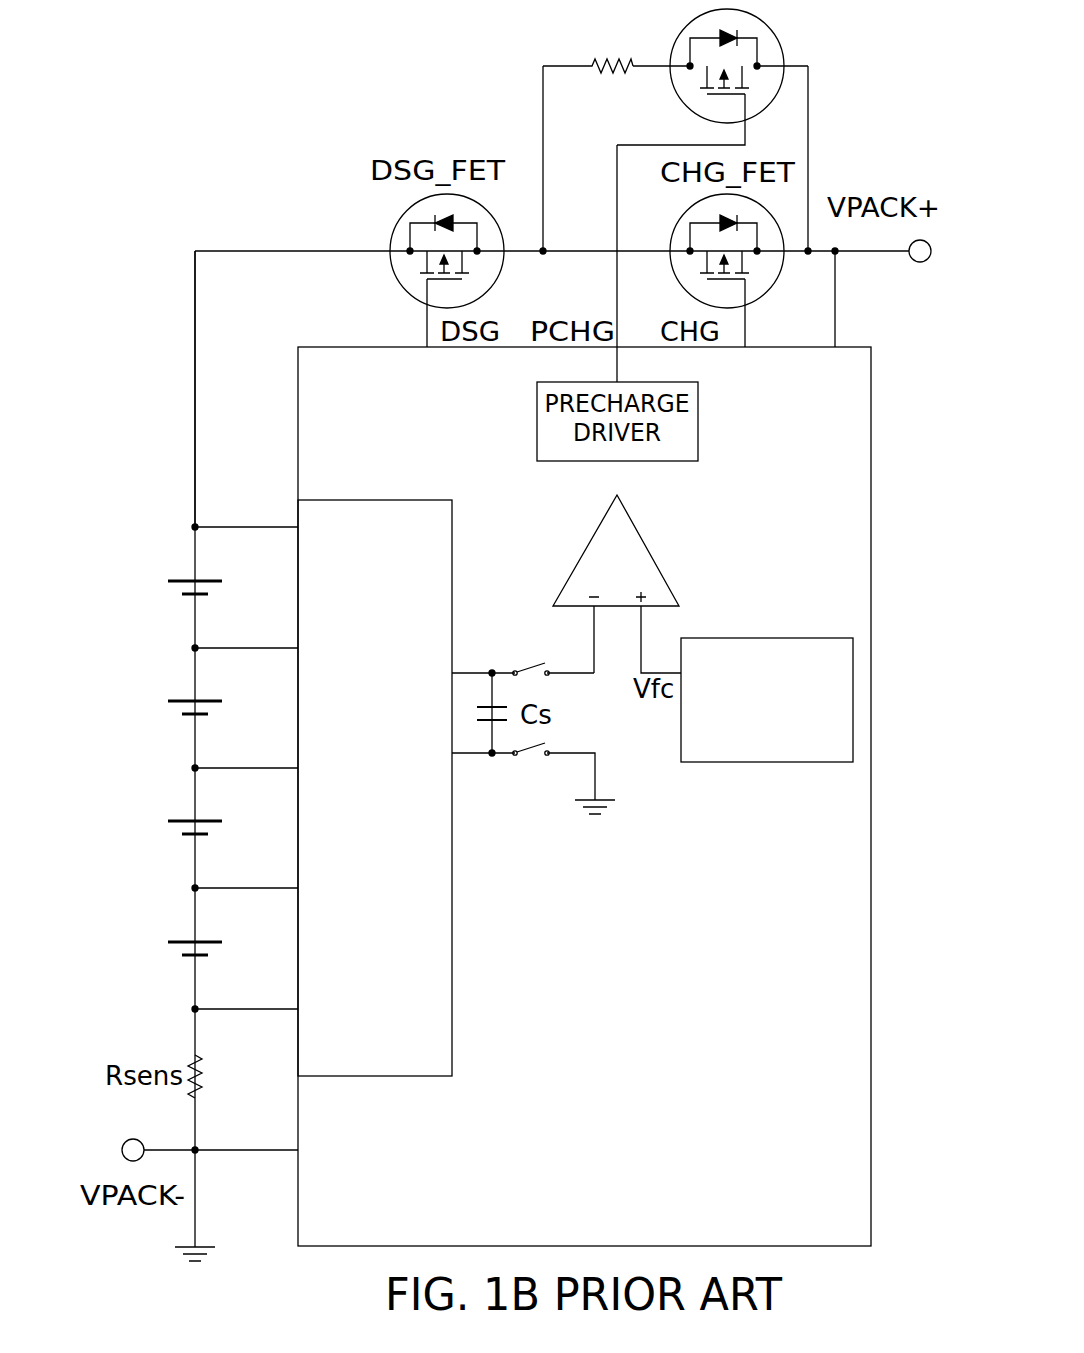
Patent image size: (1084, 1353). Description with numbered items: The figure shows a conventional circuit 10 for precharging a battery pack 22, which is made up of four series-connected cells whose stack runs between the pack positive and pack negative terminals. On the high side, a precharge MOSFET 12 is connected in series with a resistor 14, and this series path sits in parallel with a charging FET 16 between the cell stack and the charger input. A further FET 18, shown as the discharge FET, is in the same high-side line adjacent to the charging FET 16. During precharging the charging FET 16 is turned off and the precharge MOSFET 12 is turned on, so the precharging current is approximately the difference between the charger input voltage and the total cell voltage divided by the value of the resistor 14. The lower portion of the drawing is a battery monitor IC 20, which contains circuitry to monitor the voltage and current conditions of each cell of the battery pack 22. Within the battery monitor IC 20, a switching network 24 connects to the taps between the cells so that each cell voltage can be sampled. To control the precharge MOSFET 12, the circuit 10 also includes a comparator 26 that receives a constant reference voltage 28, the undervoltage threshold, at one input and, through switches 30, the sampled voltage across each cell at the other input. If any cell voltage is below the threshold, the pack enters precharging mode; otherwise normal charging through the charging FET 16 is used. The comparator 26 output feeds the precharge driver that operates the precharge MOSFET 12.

The conventional circuit 10 is at (212, 156).
The precharge MOSFET 12 is at (783, 50).
The resistor 14 is at (592, 63).
The charging FET 16 is at (769, 290).
The discharge FET 18 is at (393, 237).
The battery monitor IC 20 is at (808, 966).
The battery pack 22 is at (130, 640).
The switching network 24 is at (452, 1030).
The comparator 26 is at (651, 556).
The constant reference voltage 28 is at (775, 638).
The switches 30 is at (529, 765).